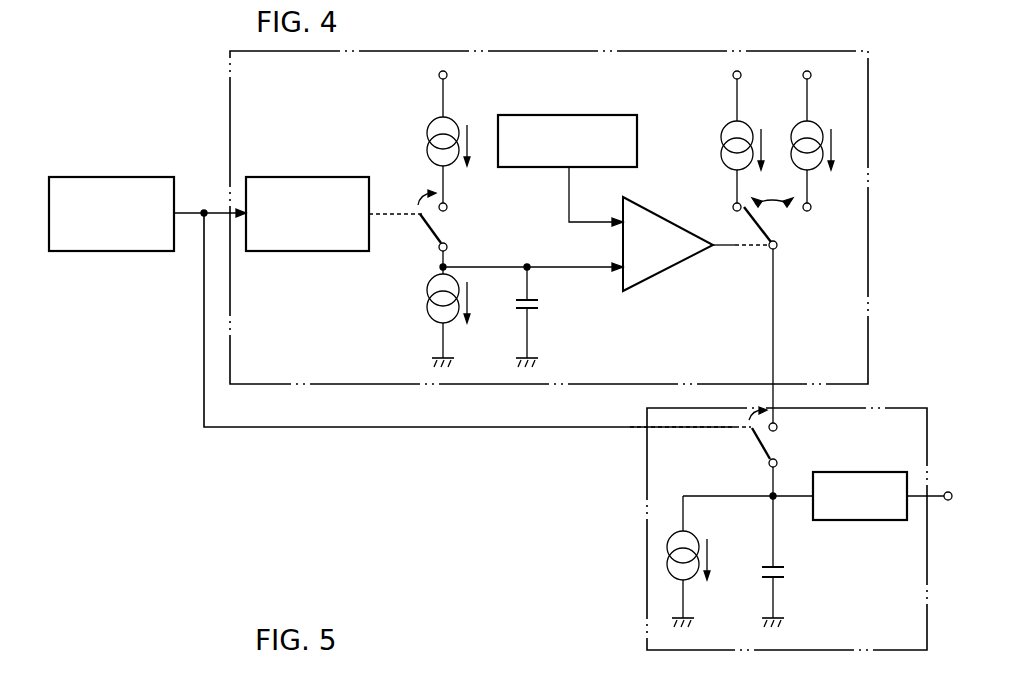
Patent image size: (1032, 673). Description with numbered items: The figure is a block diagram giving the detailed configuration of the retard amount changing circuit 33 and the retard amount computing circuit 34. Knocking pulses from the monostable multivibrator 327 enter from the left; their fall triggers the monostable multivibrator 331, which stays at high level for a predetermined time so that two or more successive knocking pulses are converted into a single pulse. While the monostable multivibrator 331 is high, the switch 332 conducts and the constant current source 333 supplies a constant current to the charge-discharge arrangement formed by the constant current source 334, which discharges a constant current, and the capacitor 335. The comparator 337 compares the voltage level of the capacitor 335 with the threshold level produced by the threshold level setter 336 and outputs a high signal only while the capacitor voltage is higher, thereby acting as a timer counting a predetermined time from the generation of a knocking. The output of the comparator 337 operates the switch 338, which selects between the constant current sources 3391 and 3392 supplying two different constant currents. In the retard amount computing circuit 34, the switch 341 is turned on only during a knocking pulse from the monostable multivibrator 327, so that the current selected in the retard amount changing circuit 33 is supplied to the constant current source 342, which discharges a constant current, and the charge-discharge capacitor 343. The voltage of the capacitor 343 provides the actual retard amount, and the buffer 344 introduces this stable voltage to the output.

The retard amount changing circuit 33 is at (868, 128).
The retard amount computing circuit 34 is at (866, 408).
The monostable multivibrator 327 is at (108, 177).
The monostable multivibrator 331 is at (282, 177).
The switch 332 is at (438, 222).
The constant current source 333 is at (428, 124).
The constant current source 334 is at (425, 322).
The capacitor 335 is at (538, 307).
The threshold level setter 336 is at (573, 115).
The comparator 337 is at (667, 215).
The switch 338 is at (778, 232).
The constant current source 3391 is at (724, 128).
The constant current source 3392 is at (795, 128).
The switch 341 is at (768, 446).
The constant current source 342 is at (699, 541).
The charge-discharge capacitor 343 is at (784, 570).
The buffer 344 is at (866, 472).